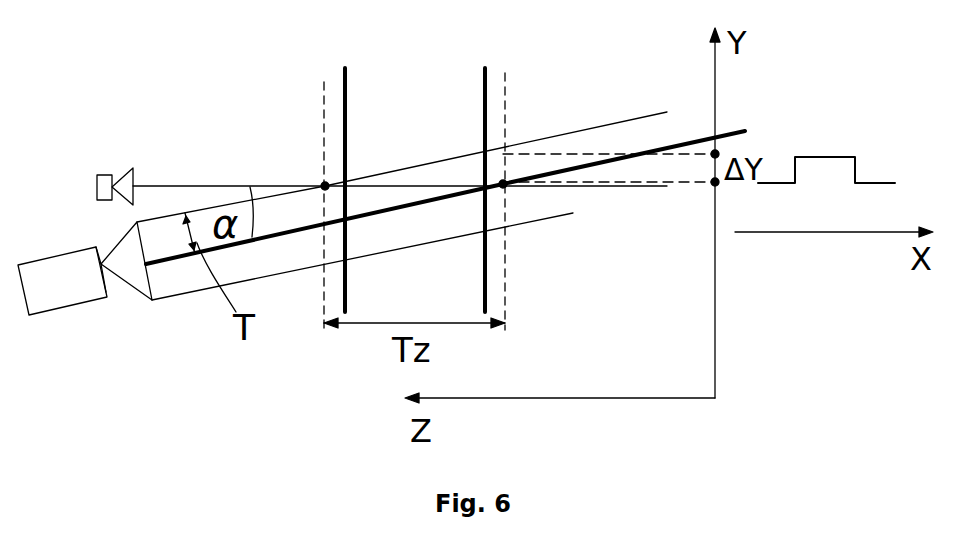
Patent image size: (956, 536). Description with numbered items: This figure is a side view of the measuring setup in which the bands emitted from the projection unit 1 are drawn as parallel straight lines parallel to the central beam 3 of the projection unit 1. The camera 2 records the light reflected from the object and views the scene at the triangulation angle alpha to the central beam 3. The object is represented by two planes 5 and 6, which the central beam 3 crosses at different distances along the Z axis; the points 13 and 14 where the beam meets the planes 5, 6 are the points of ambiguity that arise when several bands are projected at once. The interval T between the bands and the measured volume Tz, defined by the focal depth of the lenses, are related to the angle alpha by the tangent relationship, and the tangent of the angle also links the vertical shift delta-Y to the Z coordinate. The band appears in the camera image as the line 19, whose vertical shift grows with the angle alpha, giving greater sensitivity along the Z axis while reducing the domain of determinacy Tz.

The projection unit 1 is at (97, 300).
The camera 2 is at (98, 173).
The central beam of the projection unit 3 is at (743, 133).
The plane 5 is at (345, 70).
The plane 6 is at (485, 70).
The point of ambiguity 13 is at (322, 184).
The point of ambiguity 14 is at (505, 182).
The line in the camera image 19 is at (800, 177).